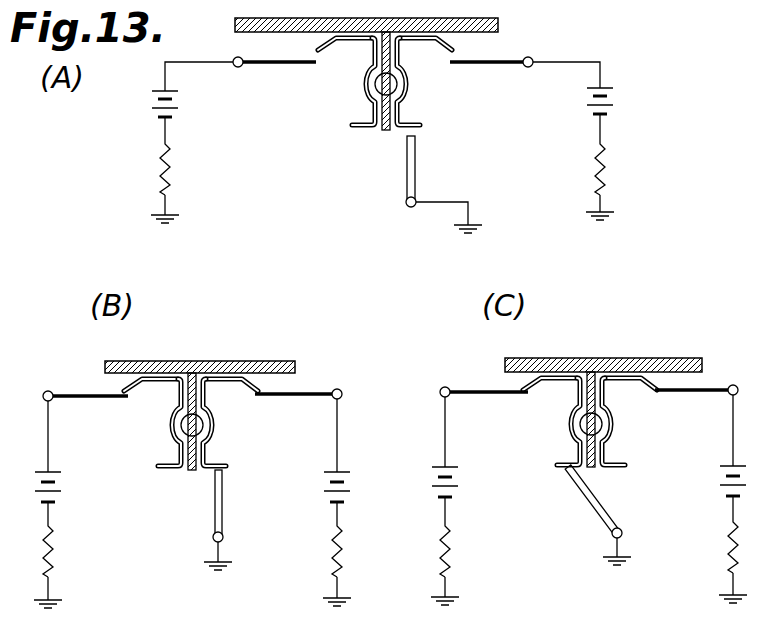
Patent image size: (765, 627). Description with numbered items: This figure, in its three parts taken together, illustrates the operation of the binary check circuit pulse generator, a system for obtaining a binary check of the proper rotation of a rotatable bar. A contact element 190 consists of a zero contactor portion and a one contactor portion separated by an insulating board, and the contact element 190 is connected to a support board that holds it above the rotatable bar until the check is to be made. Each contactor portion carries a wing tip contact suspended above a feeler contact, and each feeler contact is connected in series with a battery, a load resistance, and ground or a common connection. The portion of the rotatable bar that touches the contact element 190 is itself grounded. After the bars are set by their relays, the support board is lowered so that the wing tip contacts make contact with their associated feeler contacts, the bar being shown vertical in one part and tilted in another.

The contact element 190 is at (370, 151).